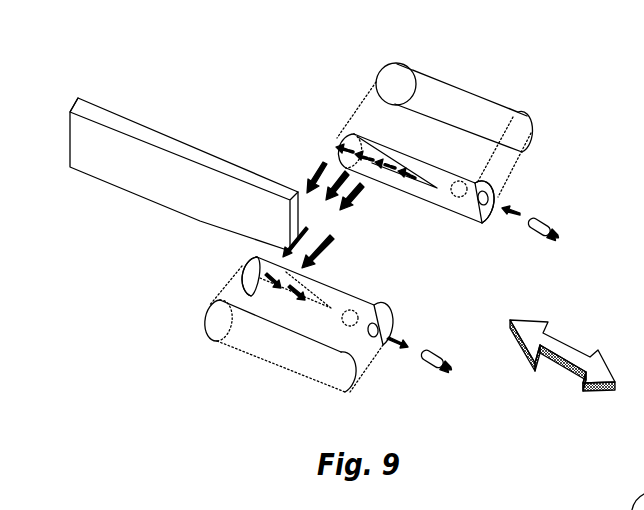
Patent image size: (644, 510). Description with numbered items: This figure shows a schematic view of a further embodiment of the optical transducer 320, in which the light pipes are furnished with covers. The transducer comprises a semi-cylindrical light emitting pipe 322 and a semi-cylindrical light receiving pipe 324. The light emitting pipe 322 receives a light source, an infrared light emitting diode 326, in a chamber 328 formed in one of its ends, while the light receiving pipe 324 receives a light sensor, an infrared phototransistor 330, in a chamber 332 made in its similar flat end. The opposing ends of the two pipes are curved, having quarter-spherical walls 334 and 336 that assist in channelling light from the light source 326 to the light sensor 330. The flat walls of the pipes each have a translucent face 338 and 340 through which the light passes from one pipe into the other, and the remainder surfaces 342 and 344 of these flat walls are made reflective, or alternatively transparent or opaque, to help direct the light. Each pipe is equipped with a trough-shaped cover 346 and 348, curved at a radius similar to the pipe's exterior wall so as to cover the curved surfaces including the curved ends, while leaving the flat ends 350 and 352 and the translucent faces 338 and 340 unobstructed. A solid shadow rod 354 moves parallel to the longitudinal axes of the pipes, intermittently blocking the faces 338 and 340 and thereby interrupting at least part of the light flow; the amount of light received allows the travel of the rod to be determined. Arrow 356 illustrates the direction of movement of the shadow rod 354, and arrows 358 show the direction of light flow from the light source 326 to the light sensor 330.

The optical transducer 320 is at (278, 87).
The light emitting pipe 322 is at (478, 224).
The light receiving pipe 324 is at (357, 298).
The infrared light emitting diode 326 is at (549, 226).
The chamber 328 is at (496, 197).
The infrared phototransistor 330 is at (428, 368).
The chamber 332 is at (390, 334).
The quarter-spherical wall 334 is at (350, 133).
The quarter-spherical wall 336 is at (243, 258).
The translucent face 338 is at (383, 177).
The translucent face 340 is at (318, 268).
The remainder surface 342 is at (437, 205).
The remainder surface 344 is at (332, 293).
The cover 346 is at (490, 94).
The cover 348 is at (266, 345).
The flat end 350 is at (507, 218).
The flat end 352 is at (384, 317).
The shadow rod 354 is at (104, 110).
The arrow 356 is at (562, 340).
The arrows 358 is at (320, 159).